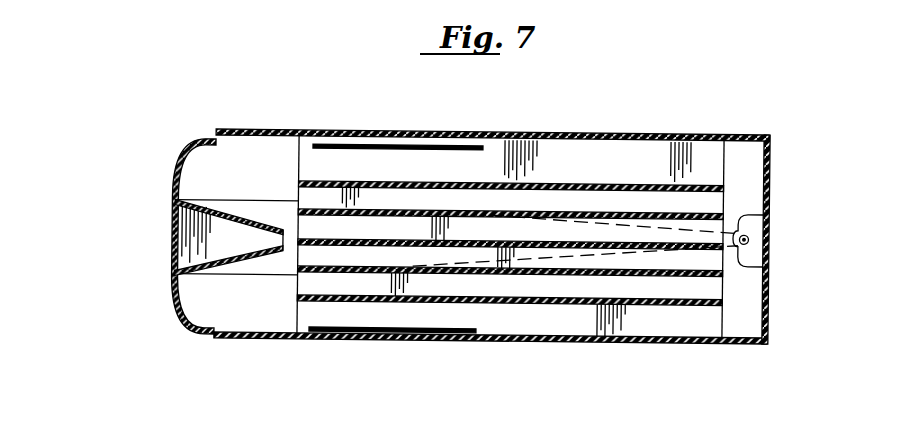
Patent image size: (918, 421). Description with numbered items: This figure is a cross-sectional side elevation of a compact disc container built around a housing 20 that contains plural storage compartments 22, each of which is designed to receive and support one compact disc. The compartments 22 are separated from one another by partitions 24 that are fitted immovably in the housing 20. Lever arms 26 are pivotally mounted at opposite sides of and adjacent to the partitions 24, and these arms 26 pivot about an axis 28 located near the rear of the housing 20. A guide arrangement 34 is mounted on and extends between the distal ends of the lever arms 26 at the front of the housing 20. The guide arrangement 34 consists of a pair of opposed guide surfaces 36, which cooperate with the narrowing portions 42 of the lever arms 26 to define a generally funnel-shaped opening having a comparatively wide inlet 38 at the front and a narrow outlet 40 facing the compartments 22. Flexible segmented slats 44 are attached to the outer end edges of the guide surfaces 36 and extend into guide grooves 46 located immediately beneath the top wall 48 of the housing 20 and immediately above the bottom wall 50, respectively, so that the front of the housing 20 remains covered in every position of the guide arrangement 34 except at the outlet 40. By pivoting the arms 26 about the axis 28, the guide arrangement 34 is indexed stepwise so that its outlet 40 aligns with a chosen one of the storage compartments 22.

The housing 20 is at (670, 136).
The storage compartments 22 is at (633, 214).
The partitions 24 is at (675, 303).
The lever arms 26 is at (285, 262).
The axis 28 is at (752, 244).
The guide arrangement 34 is at (200, 300).
The guide surfaces 36 is at (228, 250).
The inlet 38 is at (165, 214).
The outlet 40 is at (287, 232).
The narrowing portions 42 is at (243, 262).
The segmented slats 44 is at (195, 140).
The guide grooves 46 is at (427, 149).
The top wall 48 is at (567, 133).
The bottom wall 50 is at (514, 336).